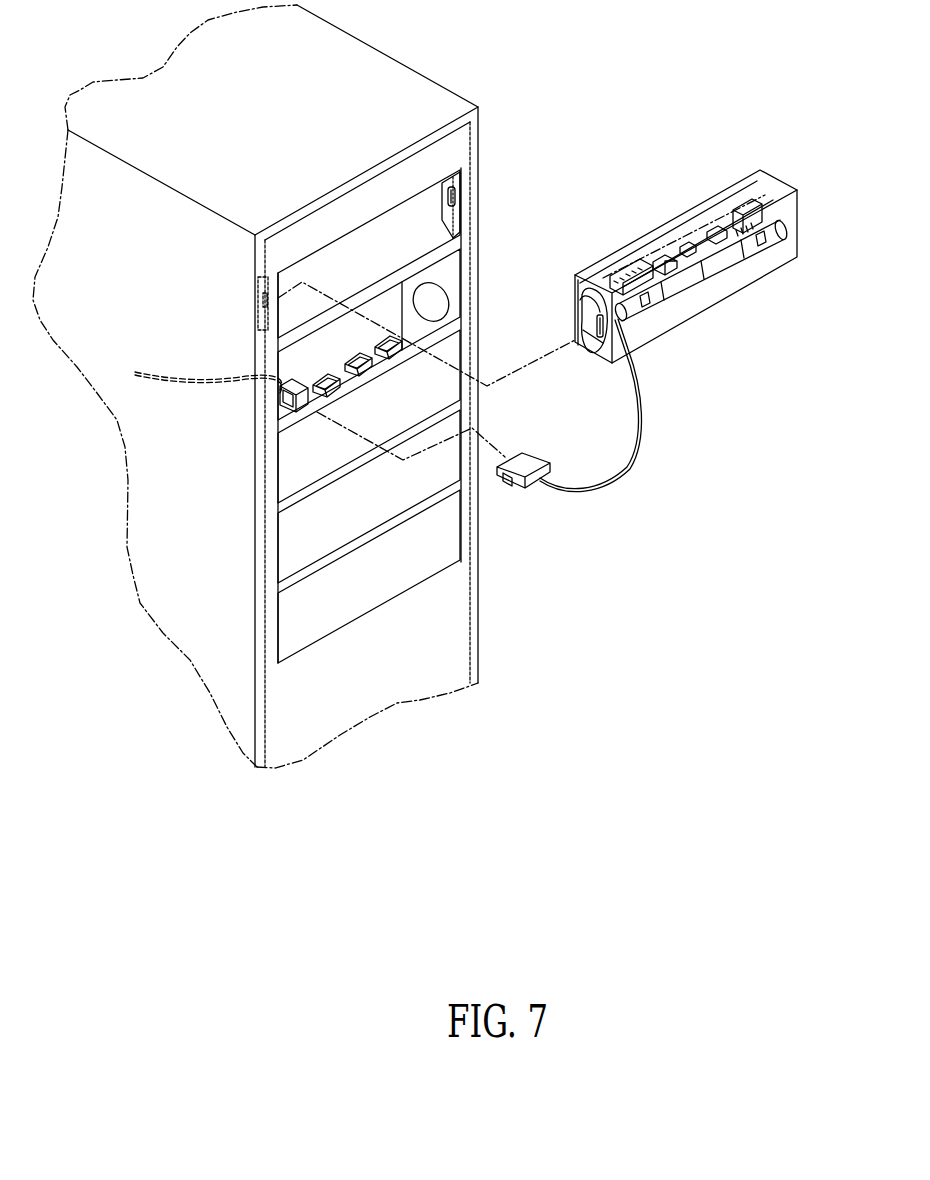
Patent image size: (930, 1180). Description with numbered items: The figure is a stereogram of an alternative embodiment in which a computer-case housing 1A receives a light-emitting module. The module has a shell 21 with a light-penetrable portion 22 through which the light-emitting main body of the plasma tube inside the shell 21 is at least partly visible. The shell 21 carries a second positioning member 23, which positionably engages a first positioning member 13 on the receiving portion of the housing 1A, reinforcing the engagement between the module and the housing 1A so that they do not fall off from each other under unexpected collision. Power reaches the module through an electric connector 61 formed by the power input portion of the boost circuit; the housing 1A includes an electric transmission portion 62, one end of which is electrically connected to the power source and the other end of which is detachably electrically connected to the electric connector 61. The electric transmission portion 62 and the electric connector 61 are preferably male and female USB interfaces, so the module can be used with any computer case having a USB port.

The housing 1A is at (361, 61).
The first positioning member 13 is at (450, 189).
The shell 21 is at (668, 259).
The light-penetrable portion 22 is at (733, 274).
The second positioning member 23 is at (597, 340).
The electric connector 61 is at (532, 462).
The electric transmission portion 62 is at (298, 418).